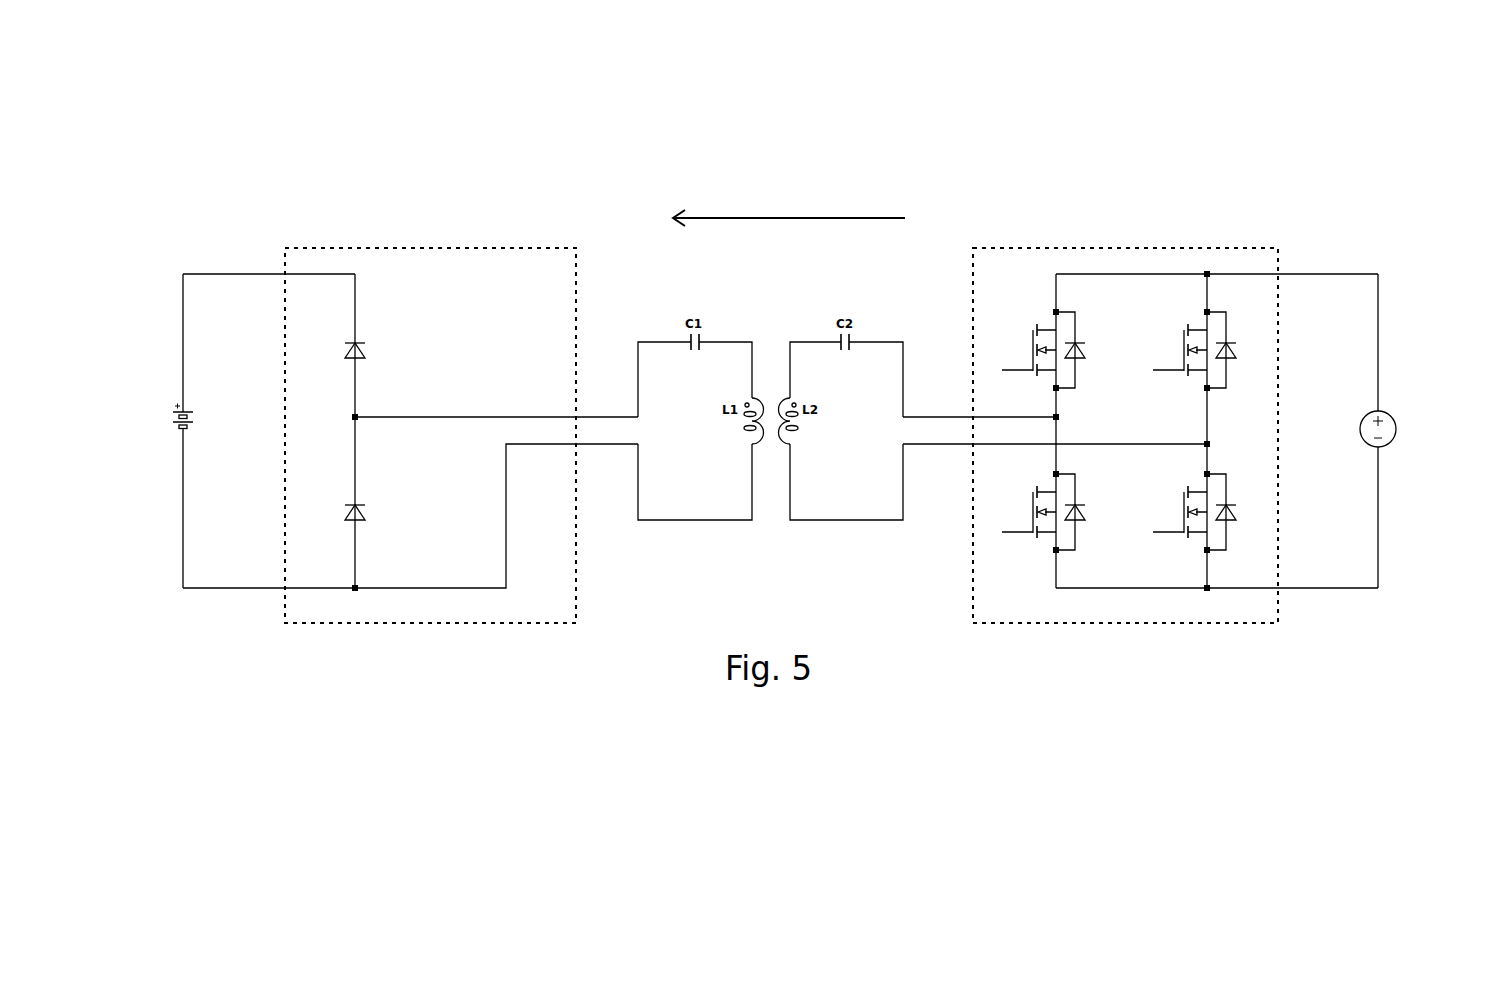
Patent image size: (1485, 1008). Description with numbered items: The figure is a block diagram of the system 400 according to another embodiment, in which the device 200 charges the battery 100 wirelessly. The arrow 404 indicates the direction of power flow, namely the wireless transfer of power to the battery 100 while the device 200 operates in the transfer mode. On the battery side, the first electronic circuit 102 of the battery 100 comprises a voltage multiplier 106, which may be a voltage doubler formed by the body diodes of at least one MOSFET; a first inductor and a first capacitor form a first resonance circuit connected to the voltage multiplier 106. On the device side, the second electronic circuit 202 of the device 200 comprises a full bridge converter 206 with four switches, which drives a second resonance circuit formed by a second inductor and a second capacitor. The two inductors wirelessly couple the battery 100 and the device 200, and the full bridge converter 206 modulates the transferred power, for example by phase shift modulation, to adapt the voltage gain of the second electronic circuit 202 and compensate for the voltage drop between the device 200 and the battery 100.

The battery 100 is at (146, 428).
The first electronic circuit 102 is at (546, 305).
The voltage multiplier 106 is at (323, 248).
The device 200 is at (1469, 440).
The second electronic circuit 202 is at (1041, 297).
The full bridge converter 206 is at (1170, 248).
The system 400 is at (1124, 120).
The arrow 404 is at (789, 202).